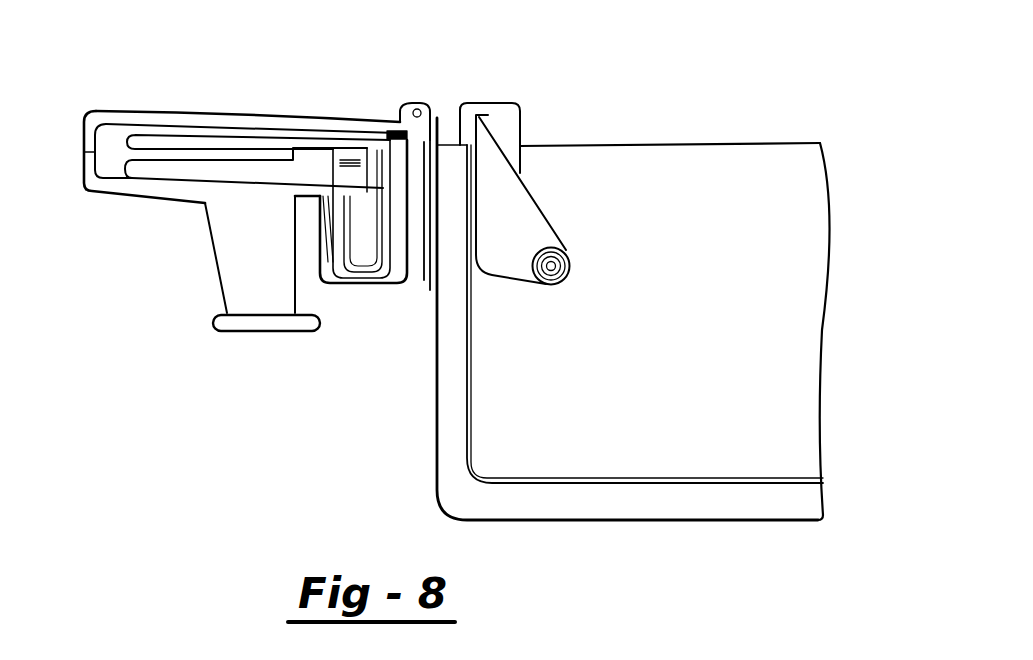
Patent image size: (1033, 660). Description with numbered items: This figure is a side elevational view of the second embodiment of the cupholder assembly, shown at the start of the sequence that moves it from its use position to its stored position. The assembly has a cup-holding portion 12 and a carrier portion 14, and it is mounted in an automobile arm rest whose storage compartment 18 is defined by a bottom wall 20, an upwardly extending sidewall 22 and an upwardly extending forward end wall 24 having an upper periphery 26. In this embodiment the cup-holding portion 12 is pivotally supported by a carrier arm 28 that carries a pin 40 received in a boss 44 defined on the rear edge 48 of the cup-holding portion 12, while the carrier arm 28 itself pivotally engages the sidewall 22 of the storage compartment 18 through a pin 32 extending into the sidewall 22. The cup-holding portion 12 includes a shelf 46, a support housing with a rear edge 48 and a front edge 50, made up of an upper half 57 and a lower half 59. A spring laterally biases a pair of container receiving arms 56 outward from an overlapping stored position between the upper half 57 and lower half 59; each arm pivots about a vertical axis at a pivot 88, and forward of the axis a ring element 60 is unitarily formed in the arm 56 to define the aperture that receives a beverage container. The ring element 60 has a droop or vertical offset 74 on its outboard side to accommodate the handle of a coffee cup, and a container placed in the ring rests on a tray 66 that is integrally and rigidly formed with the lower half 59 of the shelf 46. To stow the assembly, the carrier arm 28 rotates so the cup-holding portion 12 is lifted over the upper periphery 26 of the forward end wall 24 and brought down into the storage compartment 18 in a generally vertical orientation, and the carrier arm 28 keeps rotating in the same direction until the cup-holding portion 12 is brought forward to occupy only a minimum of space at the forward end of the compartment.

The cup-holding portion 12 is at (200, 82).
The carrier portion 14 is at (527, 147).
The storage compartment 18 is at (706, 328).
The bottom wall 20 is at (692, 478).
The sidewall 22 is at (772, 222).
The forward end wall 24 is at (474, 397).
The upper periphery 26 is at (461, 130).
The carrier arm 28 is at (497, 132).
The pin 32 is at (560, 254).
The pin 40 is at (419, 110).
The boss 44 is at (404, 104).
The shelf 46 is at (172, 111).
The rear edge 48 is at (419, 200).
The front edge 50 is at (86, 133).
The container receiving arm 56 is at (272, 122).
The upper half 57 is at (84, 140).
The lower half 59 is at (84, 196).
The ring element 60 is at (220, 125).
The tray 66 is at (258, 325).
The vertical offset 74 is at (372, 280).
The pivot 88 is at (393, 131).